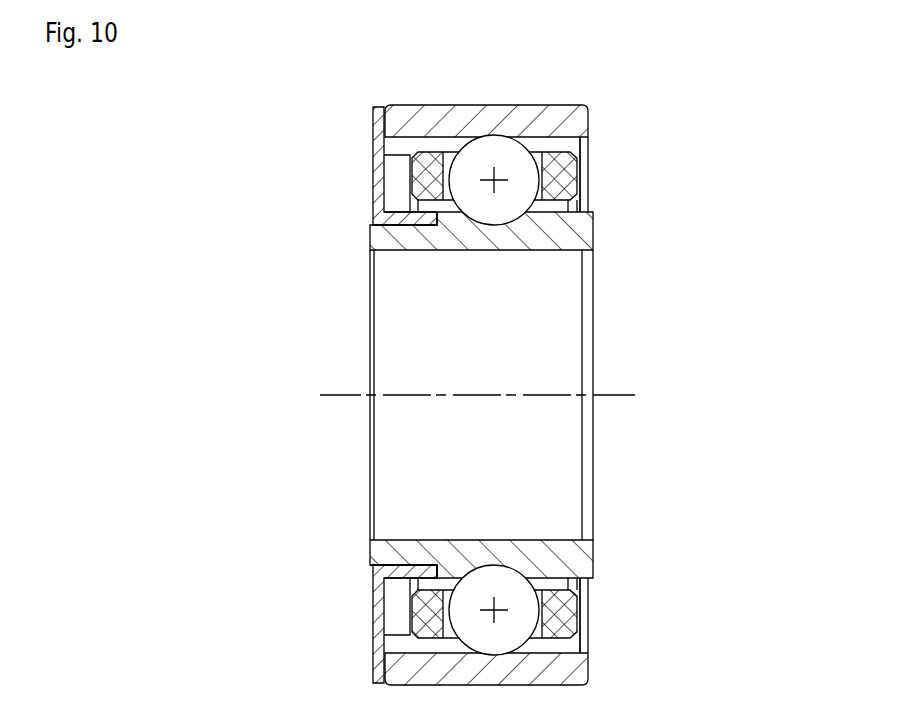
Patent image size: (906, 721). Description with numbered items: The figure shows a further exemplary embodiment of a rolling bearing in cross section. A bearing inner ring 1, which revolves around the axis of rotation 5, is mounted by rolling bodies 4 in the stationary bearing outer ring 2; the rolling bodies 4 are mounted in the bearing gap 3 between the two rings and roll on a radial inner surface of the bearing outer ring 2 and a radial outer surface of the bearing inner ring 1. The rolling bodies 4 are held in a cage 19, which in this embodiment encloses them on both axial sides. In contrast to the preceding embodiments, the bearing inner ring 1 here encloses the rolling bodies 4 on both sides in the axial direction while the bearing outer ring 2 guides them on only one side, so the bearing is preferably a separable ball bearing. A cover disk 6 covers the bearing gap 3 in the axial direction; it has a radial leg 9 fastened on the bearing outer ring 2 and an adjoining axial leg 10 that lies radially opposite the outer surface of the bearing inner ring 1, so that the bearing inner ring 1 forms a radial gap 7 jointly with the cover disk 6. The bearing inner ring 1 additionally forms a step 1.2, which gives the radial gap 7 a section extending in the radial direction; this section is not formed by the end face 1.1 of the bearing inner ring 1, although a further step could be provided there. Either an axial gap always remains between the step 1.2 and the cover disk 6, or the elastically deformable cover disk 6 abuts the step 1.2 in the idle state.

The bearing inner ring 1 is at (452, 395).
The end face 1.1 is at (372, 562).
The step 1.2 is at (455, 562).
The bearing outer ring 2 is at (572, 128).
The bearing gap 3 is at (577, 180).
The rolling bodies 4 is at (493, 215).
The axis of rotation 5 is at (625, 393).
The cover disk 6 is at (372, 172).
The radial gap 7 is at (373, 224).
The radial leg 9 is at (372, 136).
The axial leg 10 is at (405, 218).
The cage 19 is at (557, 611).